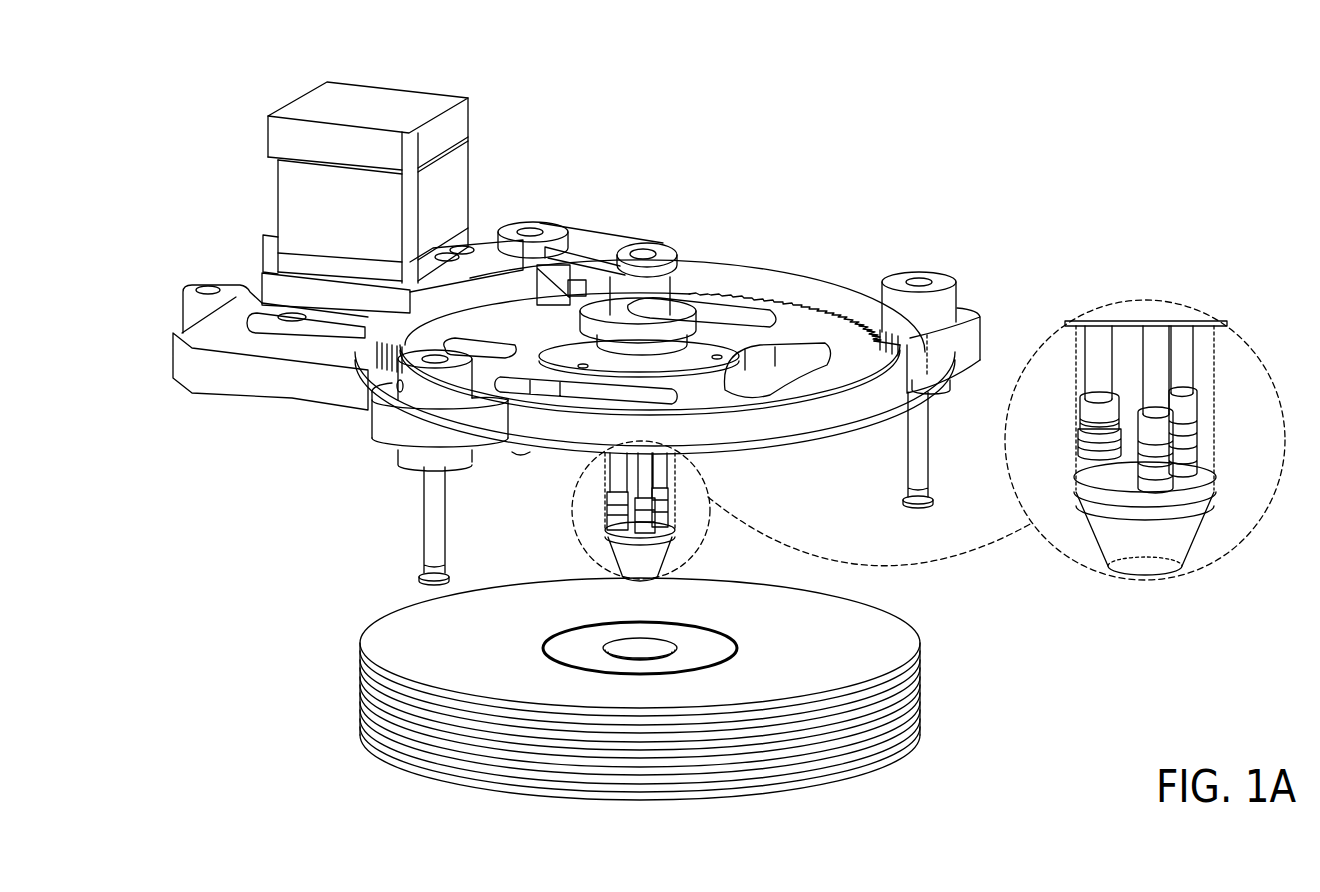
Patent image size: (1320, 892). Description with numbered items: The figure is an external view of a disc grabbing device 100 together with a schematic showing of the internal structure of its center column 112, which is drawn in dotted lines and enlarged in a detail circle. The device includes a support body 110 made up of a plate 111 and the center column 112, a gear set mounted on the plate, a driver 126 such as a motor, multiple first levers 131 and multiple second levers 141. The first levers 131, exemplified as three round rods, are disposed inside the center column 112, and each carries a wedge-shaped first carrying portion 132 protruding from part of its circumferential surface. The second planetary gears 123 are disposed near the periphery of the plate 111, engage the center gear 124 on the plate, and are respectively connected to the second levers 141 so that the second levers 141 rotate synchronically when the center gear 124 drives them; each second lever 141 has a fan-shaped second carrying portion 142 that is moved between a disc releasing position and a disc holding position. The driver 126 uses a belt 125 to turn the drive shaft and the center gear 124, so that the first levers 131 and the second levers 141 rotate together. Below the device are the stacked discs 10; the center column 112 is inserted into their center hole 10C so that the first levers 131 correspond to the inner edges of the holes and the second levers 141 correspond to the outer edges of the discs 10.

The disc grabbing device 100 is at (200, 91).
The stacked discs 10 is at (887, 655).
The center hole 10C is at (675, 640).
The support body 110 is at (1052, 136).
The plate 111 is at (742, 262).
The center column 112 is at (690, 492).
The second planetary gears 123 is at (577, 275).
The center gear 124 is at (800, 323).
The belt 125 is at (507, 327).
The driver 126 is at (418, 100).
The first lever 131 is at (1152, 347).
The first carrying portion 132 is at (1104, 438).
The second lever 141 is at (926, 440).
The second carrying portion 142 is at (933, 502).